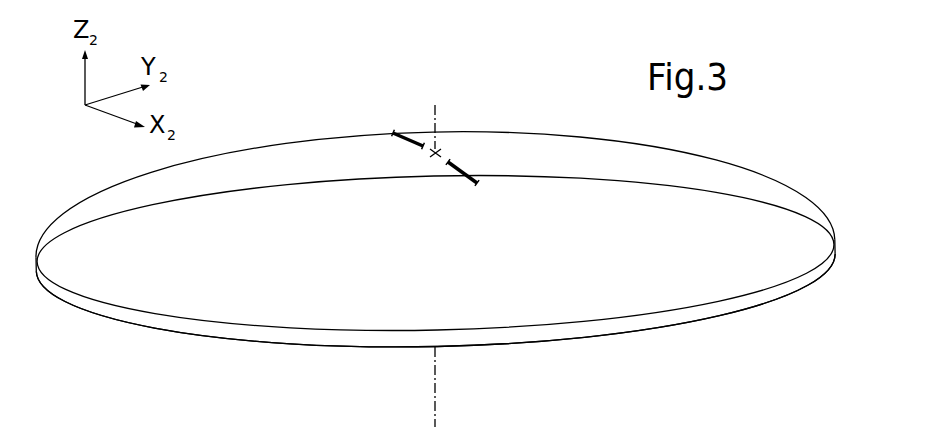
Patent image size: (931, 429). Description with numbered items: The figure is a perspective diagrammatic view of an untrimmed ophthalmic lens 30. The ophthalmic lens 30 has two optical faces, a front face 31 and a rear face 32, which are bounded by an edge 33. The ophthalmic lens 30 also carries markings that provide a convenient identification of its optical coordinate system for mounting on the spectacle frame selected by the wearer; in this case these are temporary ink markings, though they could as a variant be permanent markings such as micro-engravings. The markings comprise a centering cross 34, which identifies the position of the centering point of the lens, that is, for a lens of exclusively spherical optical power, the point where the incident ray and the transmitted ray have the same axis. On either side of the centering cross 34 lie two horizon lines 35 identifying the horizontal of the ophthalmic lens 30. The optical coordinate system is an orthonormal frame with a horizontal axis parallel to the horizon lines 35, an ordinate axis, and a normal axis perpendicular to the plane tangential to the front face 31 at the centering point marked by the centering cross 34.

The ophthalmic lens 30 is at (133, 324).
The front optical face 31 is at (305, 152).
The rear optical face 32 is at (347, 345).
The edge 33 is at (577, 330).
The centering cross 34 is at (443, 153).
The horizon lines 35 is at (455, 163).